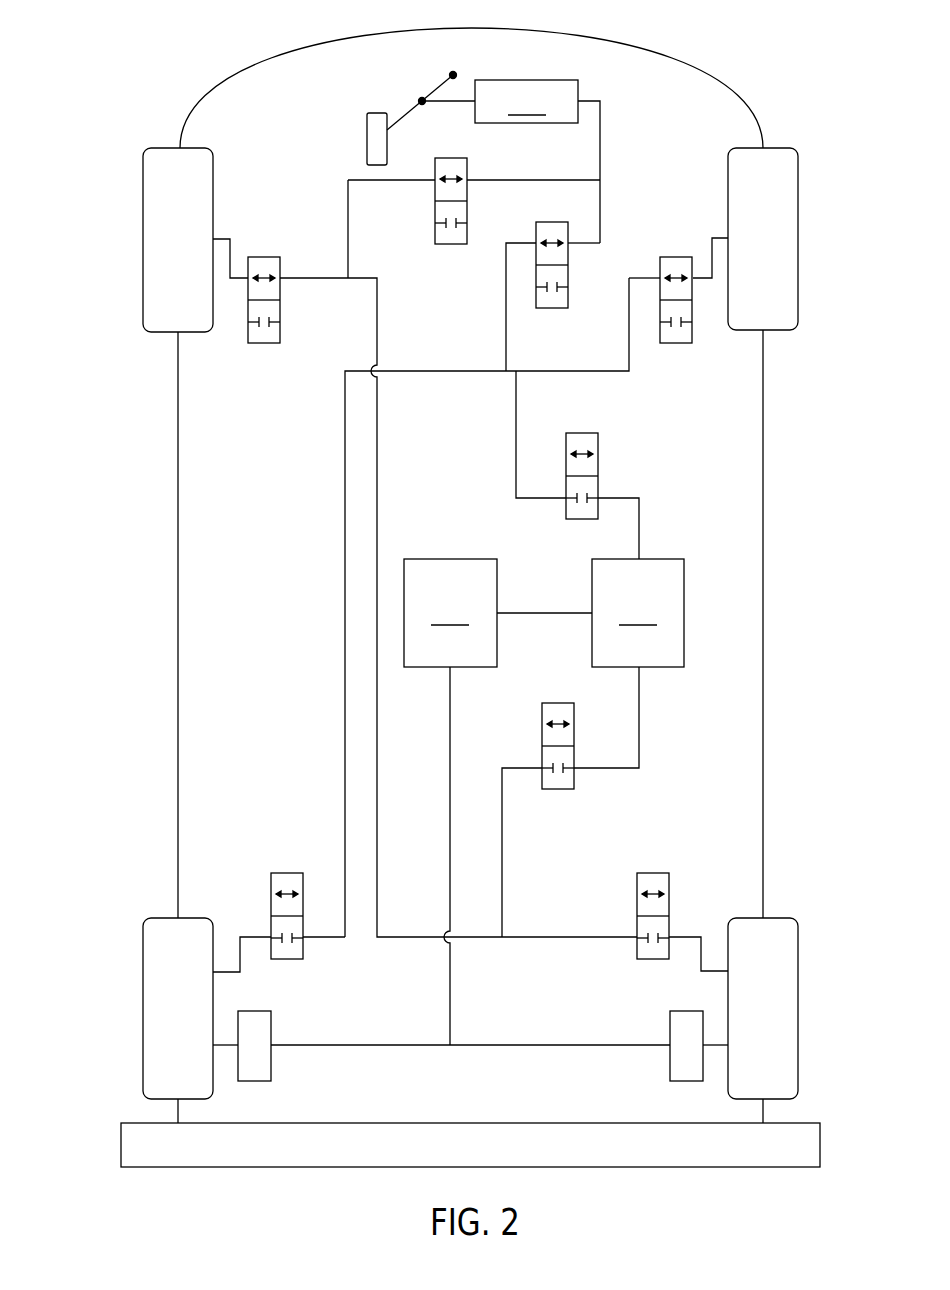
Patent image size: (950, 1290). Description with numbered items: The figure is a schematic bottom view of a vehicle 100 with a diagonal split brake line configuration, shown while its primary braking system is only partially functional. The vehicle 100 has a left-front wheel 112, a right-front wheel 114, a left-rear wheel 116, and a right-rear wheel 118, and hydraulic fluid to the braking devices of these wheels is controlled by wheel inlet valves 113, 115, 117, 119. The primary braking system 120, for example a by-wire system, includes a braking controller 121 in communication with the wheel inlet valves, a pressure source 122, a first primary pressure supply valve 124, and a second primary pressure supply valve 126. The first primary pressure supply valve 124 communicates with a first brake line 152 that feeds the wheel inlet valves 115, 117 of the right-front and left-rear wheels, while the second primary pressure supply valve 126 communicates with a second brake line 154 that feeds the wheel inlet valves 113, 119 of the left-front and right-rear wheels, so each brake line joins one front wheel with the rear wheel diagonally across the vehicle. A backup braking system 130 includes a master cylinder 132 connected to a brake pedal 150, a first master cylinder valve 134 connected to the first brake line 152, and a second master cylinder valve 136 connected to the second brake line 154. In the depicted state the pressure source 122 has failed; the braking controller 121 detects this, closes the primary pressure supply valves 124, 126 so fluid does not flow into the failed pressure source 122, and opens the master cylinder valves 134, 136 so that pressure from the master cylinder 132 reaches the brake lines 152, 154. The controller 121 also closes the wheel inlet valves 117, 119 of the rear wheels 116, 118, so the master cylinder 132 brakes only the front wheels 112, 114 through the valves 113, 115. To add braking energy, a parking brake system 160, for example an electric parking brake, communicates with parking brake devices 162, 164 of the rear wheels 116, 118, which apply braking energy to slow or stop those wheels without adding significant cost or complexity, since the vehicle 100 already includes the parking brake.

The vehicle 100 is at (127, 55).
The left-front wheel 112 is at (143, 203).
The wheel inlet valve 113 is at (270, 257).
The right-front wheel 114 is at (798, 203).
The wheel inlet valve 115 is at (680, 257).
The left-rear wheel 116 is at (143, 1007).
The wheel inlet valve 117 is at (287, 873).
The right-rear wheel 118 is at (798, 998).
The wheel inlet valve 119 is at (655, 873).
The primary braking system 120 is at (571, 802).
The braking controller 121 is at (450, 802).
The pressure source 122 is at (662, 681).
The first primary pressure supply valve 124 is at (585, 433).
The second primary pressure supply valve 126 is at (555, 790).
The backup braking system 130 is at (409, 92).
The master cylinder 132 is at (537, 161).
The first master cylinder valve 134 is at (568, 303).
The second master cylinder valve 136 is at (447, 244).
The brake pedal 150 is at (358, 136).
The first brake line 152 is at (345, 560).
The second brake line 154 is at (377, 443).
The parking brake system 160 is at (470, 1068).
The parking brake device 162 is at (262, 1011).
The parking brake device 164 is at (686, 1011).